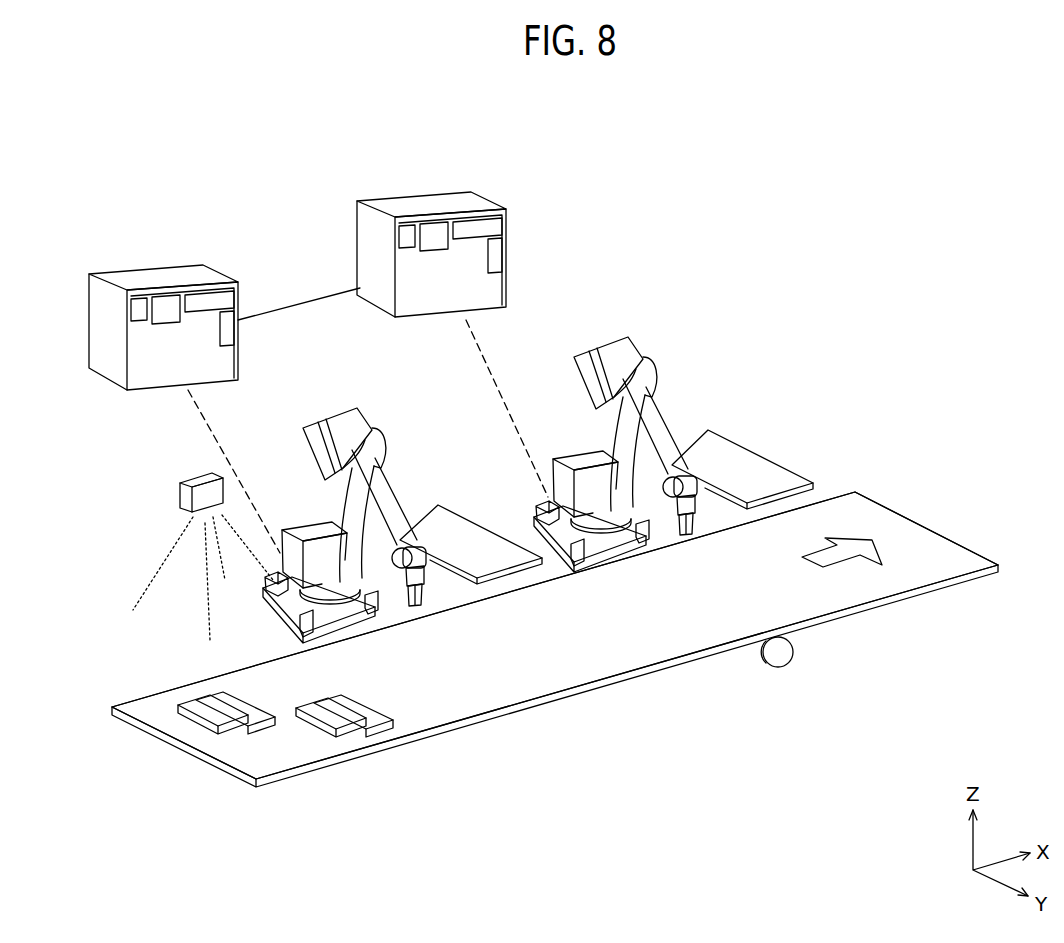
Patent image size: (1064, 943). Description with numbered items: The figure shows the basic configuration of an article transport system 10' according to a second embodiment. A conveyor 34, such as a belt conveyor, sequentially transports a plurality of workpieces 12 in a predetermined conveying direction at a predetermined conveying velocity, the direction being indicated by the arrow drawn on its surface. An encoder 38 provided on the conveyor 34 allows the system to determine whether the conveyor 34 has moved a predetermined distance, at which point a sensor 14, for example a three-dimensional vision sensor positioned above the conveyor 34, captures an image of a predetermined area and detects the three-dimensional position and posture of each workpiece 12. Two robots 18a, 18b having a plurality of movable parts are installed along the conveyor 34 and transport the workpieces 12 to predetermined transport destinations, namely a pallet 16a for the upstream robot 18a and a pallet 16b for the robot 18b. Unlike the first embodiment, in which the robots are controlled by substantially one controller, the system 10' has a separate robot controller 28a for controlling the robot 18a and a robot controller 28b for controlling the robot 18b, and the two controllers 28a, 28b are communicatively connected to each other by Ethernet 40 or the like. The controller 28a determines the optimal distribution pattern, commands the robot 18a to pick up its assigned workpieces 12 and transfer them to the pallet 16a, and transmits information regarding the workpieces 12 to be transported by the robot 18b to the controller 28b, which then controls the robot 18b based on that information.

The article transport system 10' is at (555, 448).
The workpiece 12 is at (230, 733).
The sensor 14 is at (180, 488).
The pallet 16a is at (477, 518).
The pallet 16b is at (745, 436).
The robot 18a is at (385, 416).
The robot 18b is at (655, 326).
The robot controller 28a is at (167, 266).
The robot controller 28b is at (434, 194).
The conveyor 34 is at (590, 688).
The encoder 38 is at (788, 667).
The Ethernet 40 is at (292, 303).